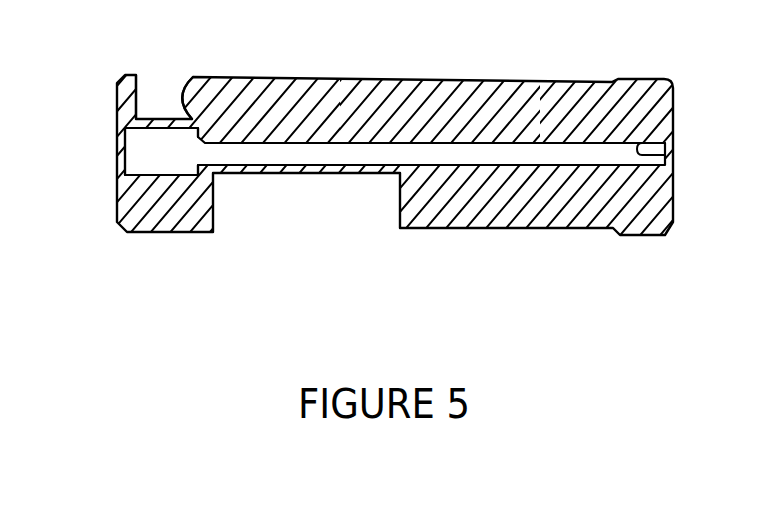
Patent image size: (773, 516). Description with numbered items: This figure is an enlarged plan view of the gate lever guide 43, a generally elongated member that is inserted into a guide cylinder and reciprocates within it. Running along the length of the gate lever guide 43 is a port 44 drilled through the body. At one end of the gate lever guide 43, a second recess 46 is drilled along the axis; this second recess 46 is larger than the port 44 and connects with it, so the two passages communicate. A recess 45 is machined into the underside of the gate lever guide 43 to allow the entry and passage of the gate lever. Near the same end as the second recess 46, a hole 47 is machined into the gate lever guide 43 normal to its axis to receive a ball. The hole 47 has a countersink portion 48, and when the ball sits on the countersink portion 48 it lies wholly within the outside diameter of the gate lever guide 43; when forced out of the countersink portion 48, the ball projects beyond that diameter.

The gate lever guide 43 is at (638, 79).
The port 44 is at (665, 150).
The recess 45 is at (348, 173).
The second recess 46 is at (162, 174).
The hole 47 is at (142, 97).
The countersink portion 48 is at (184, 97).